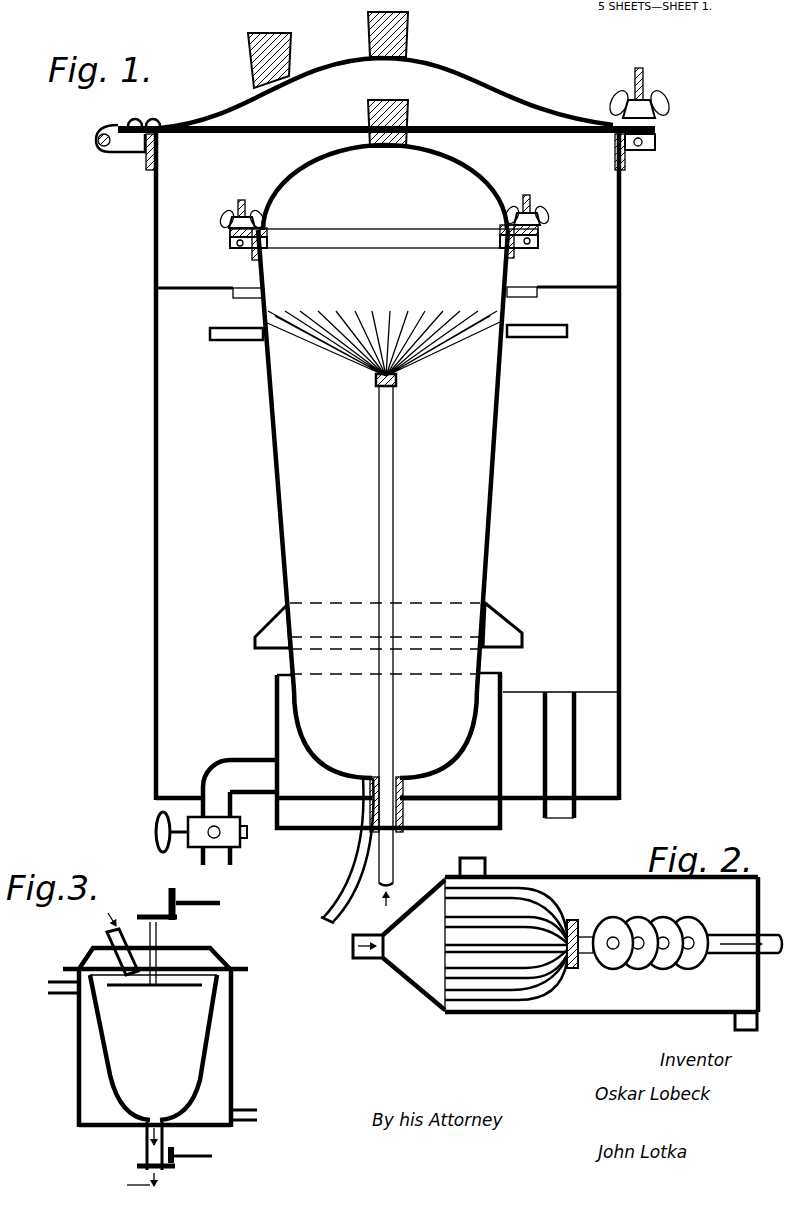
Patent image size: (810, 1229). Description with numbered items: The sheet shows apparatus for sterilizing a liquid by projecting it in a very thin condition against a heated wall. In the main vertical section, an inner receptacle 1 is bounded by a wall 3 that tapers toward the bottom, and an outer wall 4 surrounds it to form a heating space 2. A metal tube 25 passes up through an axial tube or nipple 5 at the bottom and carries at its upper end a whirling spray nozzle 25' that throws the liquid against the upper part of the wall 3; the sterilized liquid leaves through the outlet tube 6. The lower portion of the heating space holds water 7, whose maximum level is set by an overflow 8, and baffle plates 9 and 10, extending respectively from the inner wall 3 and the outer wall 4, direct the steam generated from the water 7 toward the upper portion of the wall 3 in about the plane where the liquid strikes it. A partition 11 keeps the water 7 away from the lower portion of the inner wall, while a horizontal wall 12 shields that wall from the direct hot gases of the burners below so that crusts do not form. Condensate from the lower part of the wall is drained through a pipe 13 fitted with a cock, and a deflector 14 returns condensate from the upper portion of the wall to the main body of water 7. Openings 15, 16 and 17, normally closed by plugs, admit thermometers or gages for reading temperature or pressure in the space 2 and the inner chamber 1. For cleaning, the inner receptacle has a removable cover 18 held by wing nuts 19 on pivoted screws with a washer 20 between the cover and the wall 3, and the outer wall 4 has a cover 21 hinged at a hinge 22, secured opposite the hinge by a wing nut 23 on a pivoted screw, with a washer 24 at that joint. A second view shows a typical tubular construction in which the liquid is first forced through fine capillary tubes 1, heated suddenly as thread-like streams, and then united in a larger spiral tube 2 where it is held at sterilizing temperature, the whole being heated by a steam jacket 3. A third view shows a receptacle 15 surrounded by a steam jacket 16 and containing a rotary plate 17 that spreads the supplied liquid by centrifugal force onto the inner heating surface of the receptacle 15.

In FIG. 1, the inner receptacle 1 is at (385, 607).
In FIG. 2, the inner receptacle 1 is at (514, 895).
In FIG. 1, the heating space 2 is at (183, 466).
In FIG. 2, the heating space 2 is at (640, 920).
In FIG. 1, the wall of inner receptacle 3 is at (500, 422).
In FIG. 2, the wall of inner receptacle 3 is at (746, 898).
In FIG. 1, the outer wall 4 is at (621, 372).
In FIG. 1, the axial tube or nipple 5 is at (403, 838).
In FIG. 1, the outlet tube 6 is at (348, 880).
In FIG. 1, the water 7 is at (624, 738).
In FIG. 1, the overflow 8 is at (576, 804).
In FIG. 1, the baffle plate 9 is at (540, 326).
In FIG. 1, the baffle plate 10 is at (555, 284).
In FIG. 1, the partition 11 is at (279, 757).
In FIG. 1, the horizontal wall 12 is at (300, 832).
In FIG. 1, the pipe 13 is at (238, 858).
In FIG. 1, the deflector 14 is at (510, 626).
In FIG. 1, the opening 15 is at (249, 62).
In FIG. 3, the opening 15 is at (112, 1060).
In FIG. 1, the opening 16 is at (409, 36).
In FIG. 3, the opening 16 is at (233, 1036).
In FIG. 1, the opening 17 is at (409, 113).
In FIG. 3, the opening 17 is at (172, 988).
In FIG. 1, the removable cover 18 is at (447, 170).
In FIG. 1, the wing nuts 19 is at (540, 210).
In FIG. 1, the washer 20 is at (265, 245).
In FIG. 1, the cover 21 is at (505, 86).
In FIG. 1, the hinge 22 is at (103, 147).
In FIG. 1, the wing nut 23 is at (657, 96).
In FIG. 1, the washer 24 is at (138, 119).
In FIG. 1, the metal tube 25 is at (406, 646).
In FIG. 1, the spray nozzle 25' is at (382, 357).